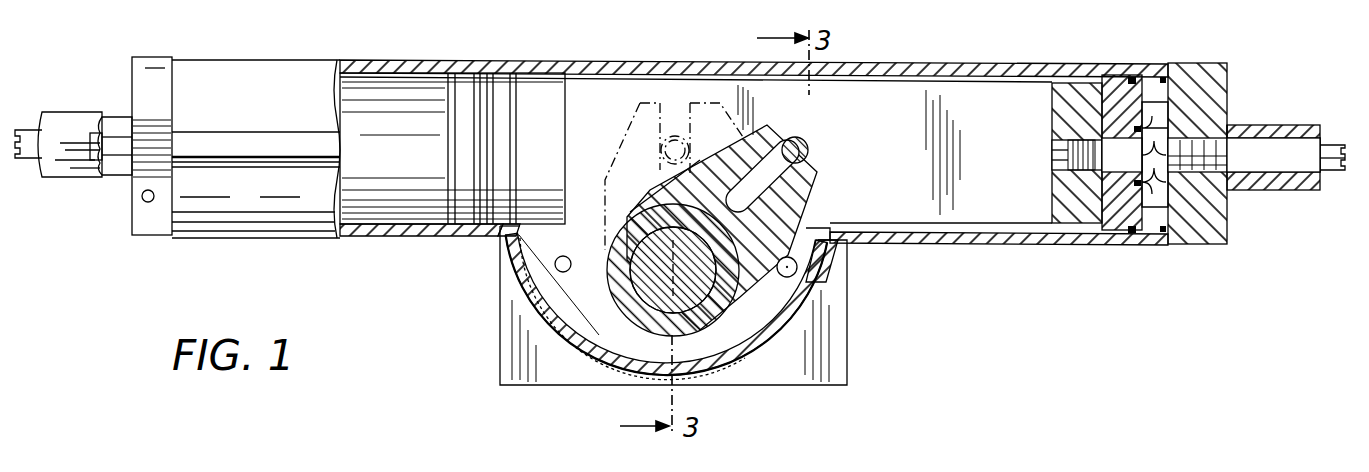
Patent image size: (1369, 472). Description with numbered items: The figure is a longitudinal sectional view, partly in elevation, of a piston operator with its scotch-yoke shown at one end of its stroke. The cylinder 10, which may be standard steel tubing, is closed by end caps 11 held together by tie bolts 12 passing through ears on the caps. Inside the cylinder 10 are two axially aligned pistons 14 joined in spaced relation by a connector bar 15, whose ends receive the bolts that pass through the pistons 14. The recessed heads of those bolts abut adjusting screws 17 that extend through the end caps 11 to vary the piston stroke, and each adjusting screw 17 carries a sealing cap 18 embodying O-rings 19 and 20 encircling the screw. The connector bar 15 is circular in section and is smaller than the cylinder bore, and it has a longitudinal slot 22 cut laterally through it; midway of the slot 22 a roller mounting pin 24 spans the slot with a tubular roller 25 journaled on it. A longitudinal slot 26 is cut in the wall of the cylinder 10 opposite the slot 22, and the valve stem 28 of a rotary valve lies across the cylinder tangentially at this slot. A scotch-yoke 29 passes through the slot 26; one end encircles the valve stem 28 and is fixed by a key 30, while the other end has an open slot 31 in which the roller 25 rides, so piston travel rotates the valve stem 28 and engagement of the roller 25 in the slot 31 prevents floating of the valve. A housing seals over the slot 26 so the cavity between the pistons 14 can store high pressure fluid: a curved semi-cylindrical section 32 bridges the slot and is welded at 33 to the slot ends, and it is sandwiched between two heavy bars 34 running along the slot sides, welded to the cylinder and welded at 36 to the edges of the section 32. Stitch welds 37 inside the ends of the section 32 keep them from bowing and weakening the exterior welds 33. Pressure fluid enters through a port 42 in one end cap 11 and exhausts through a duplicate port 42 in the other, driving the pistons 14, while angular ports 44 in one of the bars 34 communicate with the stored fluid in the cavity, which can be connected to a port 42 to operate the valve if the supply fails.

The cylinder 10 is at (940, 228).
The end caps 11 is at (146, 224).
The tie bolts 12 is at (235, 112).
The pistons 14 is at (1149, 234).
The connector bar 15 is at (904, 229).
The adjusting screws 17 is at (1254, 134).
The sealing caps 18 is at (1278, 190).
The O-ring 19 is at (1226, 126).
The O-ring 20 is at (1319, 176).
The longitudinal slot 22 is at (1052, 222).
The roller mounting pin 24 is at (797, 142).
The tubular roller 25 is at (808, 150).
The longitudinal slot 26 is at (505, 236).
The valve stem 28 is at (640, 275).
The scotch-yoke 29 is at (788, 274).
The key 30 is at (700, 228).
The open slot 31 is at (810, 172).
The curved semi-cylindrical section 32 is at (718, 364).
The welds 33 is at (510, 258).
The bars 34 is at (840, 360).
The welds 36 is at (582, 348).
The stitch welds 37 is at (572, 252).
The port 42 is at (142, 197).
The angular ports 44 is at (530, 272).